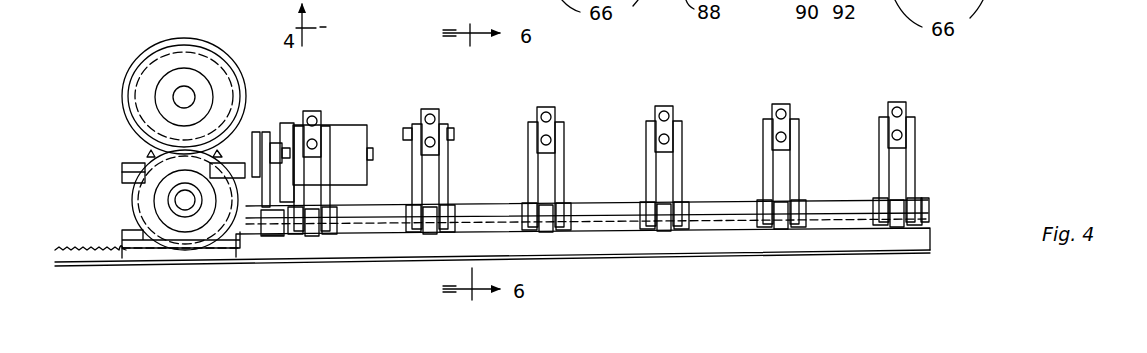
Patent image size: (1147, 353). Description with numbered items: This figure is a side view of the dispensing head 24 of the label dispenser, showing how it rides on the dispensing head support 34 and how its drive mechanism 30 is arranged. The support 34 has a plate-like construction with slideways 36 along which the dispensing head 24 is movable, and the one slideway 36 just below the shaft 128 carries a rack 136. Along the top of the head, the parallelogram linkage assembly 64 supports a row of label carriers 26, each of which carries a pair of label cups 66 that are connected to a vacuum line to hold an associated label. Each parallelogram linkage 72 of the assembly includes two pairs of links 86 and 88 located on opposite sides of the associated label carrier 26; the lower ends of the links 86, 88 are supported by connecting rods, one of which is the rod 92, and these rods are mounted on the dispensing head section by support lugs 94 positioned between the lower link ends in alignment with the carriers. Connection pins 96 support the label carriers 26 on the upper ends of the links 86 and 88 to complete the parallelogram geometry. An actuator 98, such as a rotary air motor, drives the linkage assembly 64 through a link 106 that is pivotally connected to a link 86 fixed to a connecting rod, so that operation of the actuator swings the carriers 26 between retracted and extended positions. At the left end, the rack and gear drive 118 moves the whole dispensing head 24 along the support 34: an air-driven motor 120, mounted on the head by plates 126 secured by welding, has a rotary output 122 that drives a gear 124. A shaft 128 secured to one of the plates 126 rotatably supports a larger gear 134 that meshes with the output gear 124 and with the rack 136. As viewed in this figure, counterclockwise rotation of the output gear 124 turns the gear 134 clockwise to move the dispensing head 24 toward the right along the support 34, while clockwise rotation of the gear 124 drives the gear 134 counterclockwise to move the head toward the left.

The dispensing head 24 is at (945, 219).
The label carriers 26 is at (313, 112).
The drive mechanism 30 is at (256, 118).
The dispensing head support 34 is at (49, 259).
The slideways 36 is at (95, 257).
The parallelogram linkage assembly 64 is at (723, 92).
The label cups 66 is at (539, 121).
The parallelogram linkages 72 is at (409, 171).
The links 86 is at (267, 200).
The links 88 is at (565, 182).
The connecting rod 92 is at (463, 218).
The support lugs 94 is at (312, 234).
The connection pins 96 is at (402, 131).
The actuator 98 is at (341, 125).
The link 106 is at (266, 131).
The rack and gear drive 118 is at (121, 139).
The motor 120 is at (178, 39).
The rotary output 122 is at (188, 96).
The gear 124 is at (152, 62).
The plates 126 is at (122, 171).
The shaft 128 is at (173, 198).
The gear 134 is at (140, 218).
The rack 136 is at (117, 250).